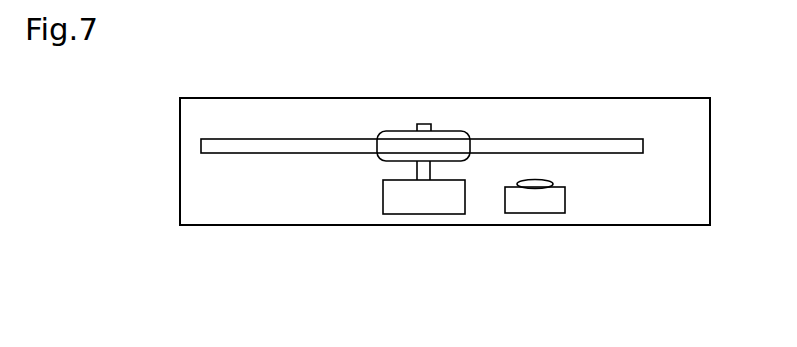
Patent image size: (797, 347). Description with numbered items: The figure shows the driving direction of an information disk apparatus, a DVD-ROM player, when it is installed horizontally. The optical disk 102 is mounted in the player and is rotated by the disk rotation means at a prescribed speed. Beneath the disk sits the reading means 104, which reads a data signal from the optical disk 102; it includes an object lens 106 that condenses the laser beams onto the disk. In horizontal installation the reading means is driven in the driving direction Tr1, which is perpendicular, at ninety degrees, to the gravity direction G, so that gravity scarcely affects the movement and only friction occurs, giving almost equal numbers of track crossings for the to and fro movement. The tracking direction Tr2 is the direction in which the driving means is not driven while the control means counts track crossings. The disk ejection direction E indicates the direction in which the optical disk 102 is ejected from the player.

The optical disk 102 is at (543, 138).
The reading means 104 is at (565, 198).
The object lens 106 is at (550, 182).
The driving direction Tr1 is at (497, 238).
The tracking direction Tr2 is at (555, 169).
The gravity direction G is at (416, 251).
The disk ejection direction E is at (718, 127).